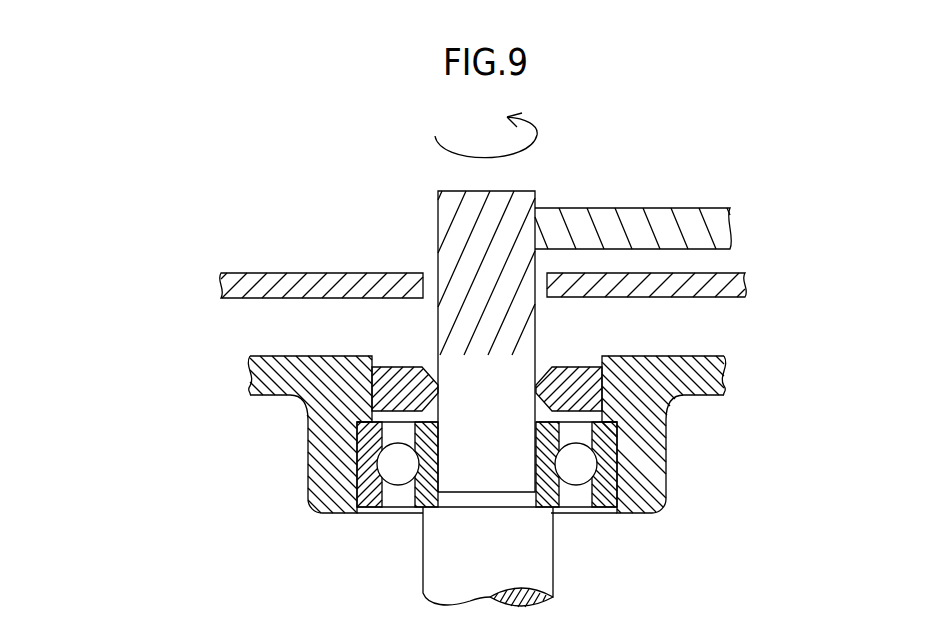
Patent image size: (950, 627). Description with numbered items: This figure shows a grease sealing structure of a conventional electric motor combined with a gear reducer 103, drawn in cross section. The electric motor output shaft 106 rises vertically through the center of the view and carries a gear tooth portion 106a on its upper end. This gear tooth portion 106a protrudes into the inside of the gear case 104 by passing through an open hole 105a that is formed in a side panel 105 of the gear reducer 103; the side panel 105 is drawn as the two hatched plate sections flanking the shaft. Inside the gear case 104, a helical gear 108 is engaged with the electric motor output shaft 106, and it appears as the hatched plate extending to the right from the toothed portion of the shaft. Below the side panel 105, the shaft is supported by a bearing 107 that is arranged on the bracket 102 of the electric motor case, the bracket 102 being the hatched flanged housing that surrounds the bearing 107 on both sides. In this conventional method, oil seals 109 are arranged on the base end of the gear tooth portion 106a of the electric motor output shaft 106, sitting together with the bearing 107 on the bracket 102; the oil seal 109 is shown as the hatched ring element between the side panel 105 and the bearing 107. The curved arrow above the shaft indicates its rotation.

The bracket 102 is at (703, 380).
The gear reducer 103 is at (225, 248).
The gear case 104 is at (645, 178).
The side panel 105 is at (728, 290).
The open hole 105a is at (426, 284).
The electric motor output shaft 106 is at (430, 557).
The gear tooth portion 106a is at (445, 242).
The bearing 107 is at (602, 492).
The helical gear 108 is at (713, 218).
The oil seal 109 is at (578, 368).